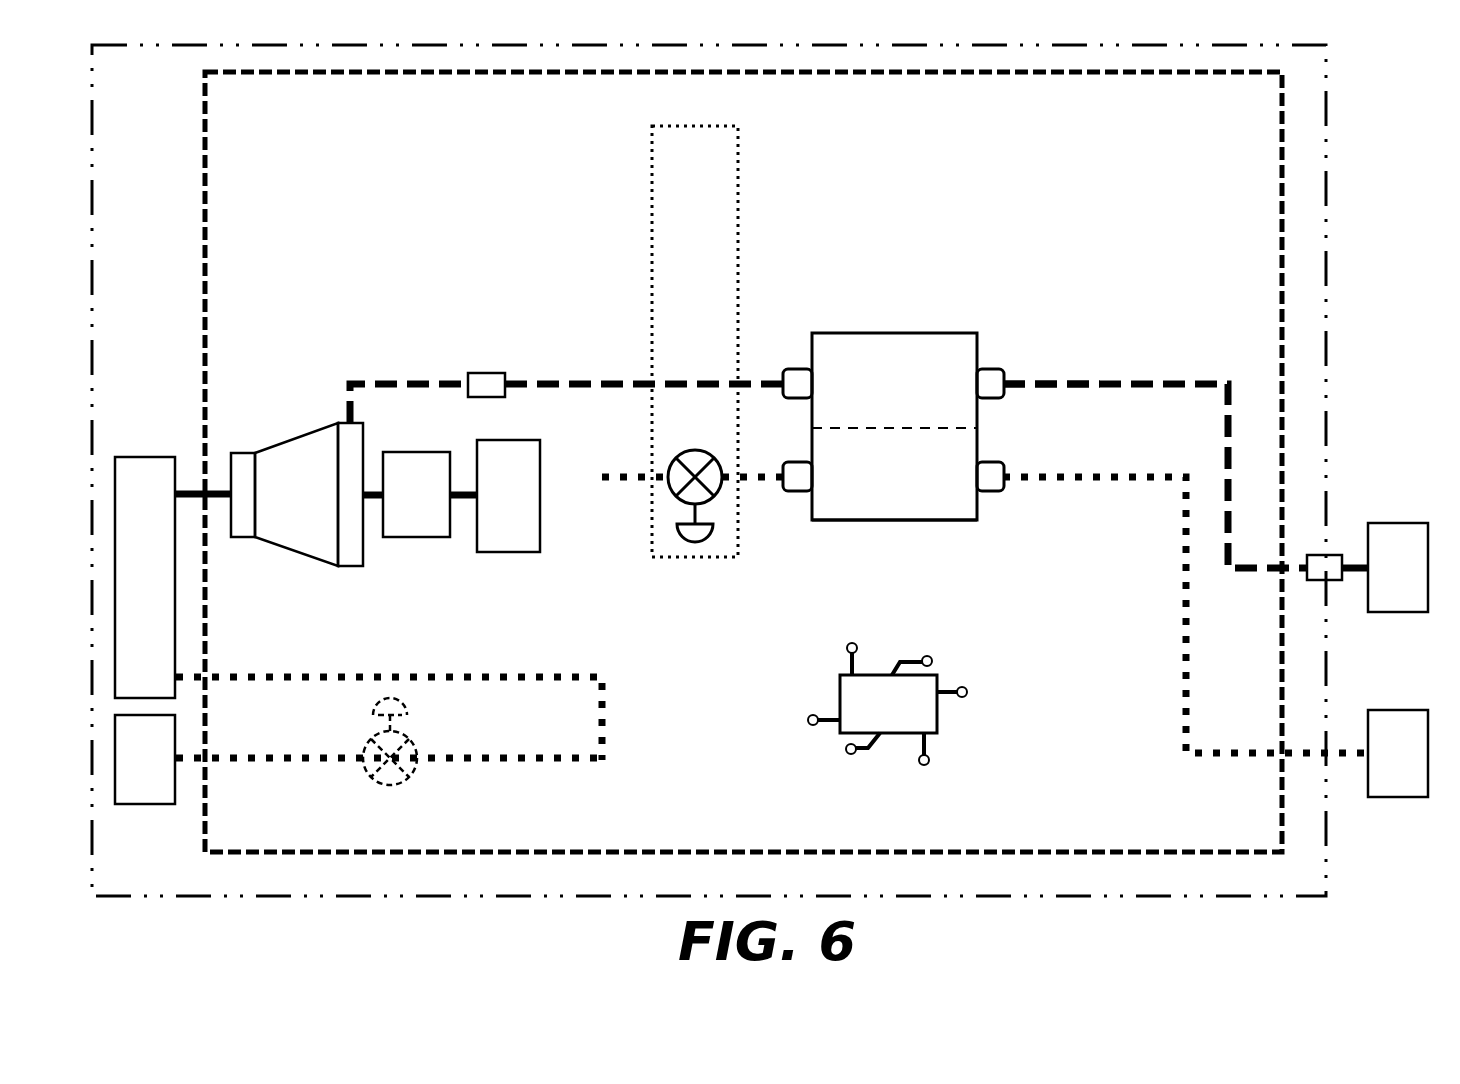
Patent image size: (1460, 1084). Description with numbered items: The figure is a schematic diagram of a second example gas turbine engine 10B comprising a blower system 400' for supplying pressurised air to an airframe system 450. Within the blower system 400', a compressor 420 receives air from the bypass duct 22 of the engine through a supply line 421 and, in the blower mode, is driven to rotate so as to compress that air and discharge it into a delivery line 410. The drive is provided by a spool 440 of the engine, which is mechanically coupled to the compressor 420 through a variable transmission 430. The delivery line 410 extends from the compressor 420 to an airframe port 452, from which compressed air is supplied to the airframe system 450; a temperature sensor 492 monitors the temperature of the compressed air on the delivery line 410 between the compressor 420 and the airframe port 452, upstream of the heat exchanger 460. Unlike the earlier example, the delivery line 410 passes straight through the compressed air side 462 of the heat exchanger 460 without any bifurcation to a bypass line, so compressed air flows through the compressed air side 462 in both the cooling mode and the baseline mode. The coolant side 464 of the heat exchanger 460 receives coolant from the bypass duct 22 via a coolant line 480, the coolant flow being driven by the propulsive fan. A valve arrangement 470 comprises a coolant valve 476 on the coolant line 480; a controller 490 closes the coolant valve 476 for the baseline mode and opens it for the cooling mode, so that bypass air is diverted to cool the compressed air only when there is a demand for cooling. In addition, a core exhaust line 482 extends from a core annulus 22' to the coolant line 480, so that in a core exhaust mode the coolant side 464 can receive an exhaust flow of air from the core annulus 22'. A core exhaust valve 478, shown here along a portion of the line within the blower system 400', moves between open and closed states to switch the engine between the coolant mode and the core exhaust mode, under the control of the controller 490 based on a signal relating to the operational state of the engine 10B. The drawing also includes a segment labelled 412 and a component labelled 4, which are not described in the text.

The second example gas turbine engine 10B is at (112, 92).
The blower system 400' is at (743, 462).
The bypass duct 22 is at (145, 527).
The core annulus 22' is at (146, 799).
The supply line 421 is at (213, 493).
The compressor 420 is at (293, 528).
The variable transmission 430 is at (420, 507).
The spool 440 is at (510, 533).
The delivery line 410 is at (418, 382).
The temperature sensor 492 is at (487, 377).
The valve arrangement 470 is at (672, 169).
The coolant valve 476 is at (712, 528).
The core exhaust valve 478 is at (407, 742).
The coolant line 480 is at (323, 677).
The core exhaust line 482 is at (255, 785).
The heat exchanger 460 is at (893, 449).
The compressed air side 462 is at (917, 397).
The coolant side 464 is at (917, 491).
The fluid line segment 412 is at (1045, 378).
The airframe port 452 is at (1327, 565).
The airframe system 450 is at (1402, 590).
The external component 4 is at (1390, 772).
The controller 490 is at (864, 716).